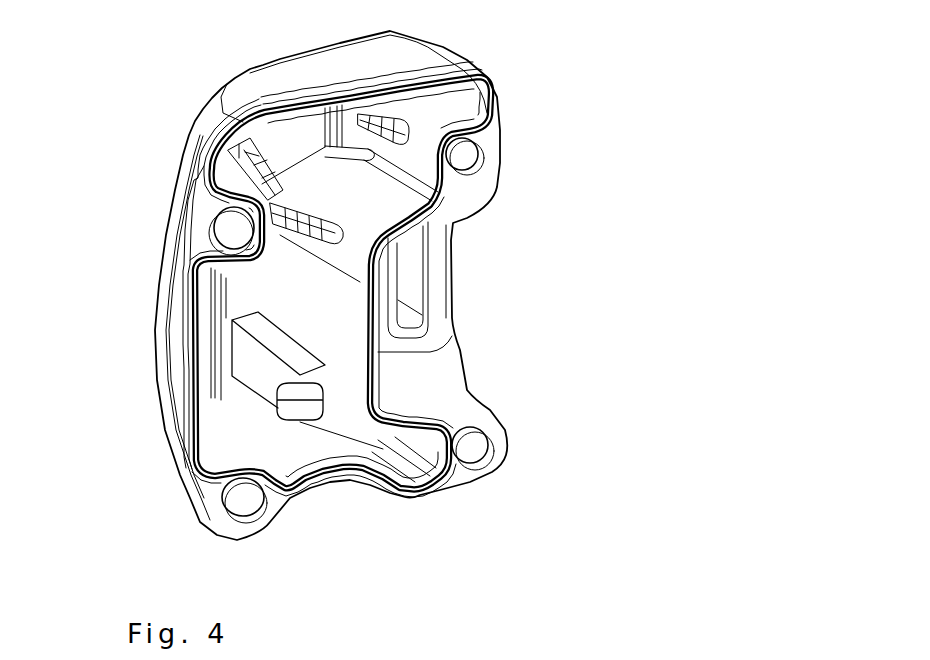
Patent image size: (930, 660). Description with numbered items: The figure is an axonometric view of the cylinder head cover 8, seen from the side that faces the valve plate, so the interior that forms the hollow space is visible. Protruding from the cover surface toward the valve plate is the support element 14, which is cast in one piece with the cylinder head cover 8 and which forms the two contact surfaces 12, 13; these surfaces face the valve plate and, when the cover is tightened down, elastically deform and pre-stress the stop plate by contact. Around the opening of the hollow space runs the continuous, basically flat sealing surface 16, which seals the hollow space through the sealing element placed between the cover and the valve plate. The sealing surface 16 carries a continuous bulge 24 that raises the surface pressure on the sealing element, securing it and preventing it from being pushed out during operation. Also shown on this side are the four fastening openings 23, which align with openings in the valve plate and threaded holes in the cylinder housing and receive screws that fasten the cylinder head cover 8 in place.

The cylinder head cover 8 is at (378, 62).
The contact surface 12 is at (430, 337).
The contact surface 13 is at (300, 410).
The support element 14 is at (250, 382).
The sealing surface 16 is at (217, 515).
The fastening openings 23 is at (457, 162).
The bulge 24 is at (217, 200).